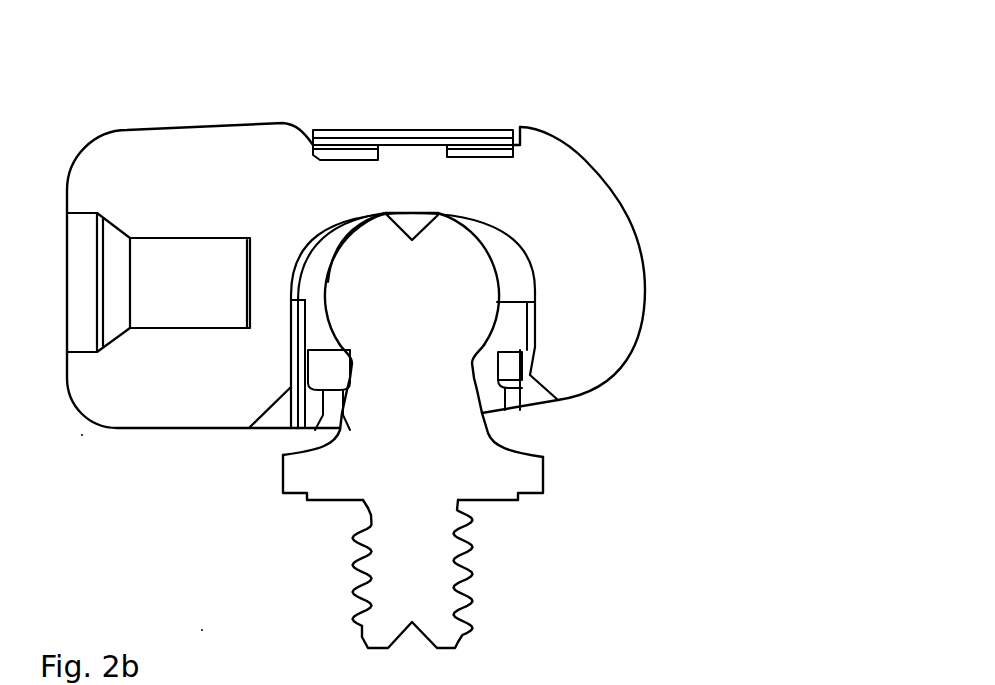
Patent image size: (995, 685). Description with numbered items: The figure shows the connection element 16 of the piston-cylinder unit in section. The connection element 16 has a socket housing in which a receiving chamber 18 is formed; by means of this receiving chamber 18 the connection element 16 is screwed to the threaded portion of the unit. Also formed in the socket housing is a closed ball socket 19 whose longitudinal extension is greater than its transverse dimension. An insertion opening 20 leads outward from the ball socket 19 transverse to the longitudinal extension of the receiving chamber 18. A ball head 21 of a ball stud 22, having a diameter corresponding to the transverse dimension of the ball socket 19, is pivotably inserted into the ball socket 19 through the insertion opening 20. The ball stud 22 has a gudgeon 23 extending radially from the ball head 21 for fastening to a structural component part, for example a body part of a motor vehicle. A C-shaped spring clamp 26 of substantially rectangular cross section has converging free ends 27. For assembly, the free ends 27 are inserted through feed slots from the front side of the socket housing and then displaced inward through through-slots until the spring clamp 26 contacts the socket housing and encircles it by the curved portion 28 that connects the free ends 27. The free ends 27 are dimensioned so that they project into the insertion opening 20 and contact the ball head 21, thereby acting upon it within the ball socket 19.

The connection element 16 is at (213, 453).
The receiving chamber 18 is at (193, 283).
The ball socket 19 is at (507, 258).
The insertion opening 20 is at (528, 330).
The ball head 21 is at (447, 242).
The ball stud 22 is at (340, 517).
The gudgeon 23 is at (455, 433).
The spring clamp 26 is at (340, 135).
The free ends 27 is at (497, 377).
The curved portion 28 is at (415, 130).